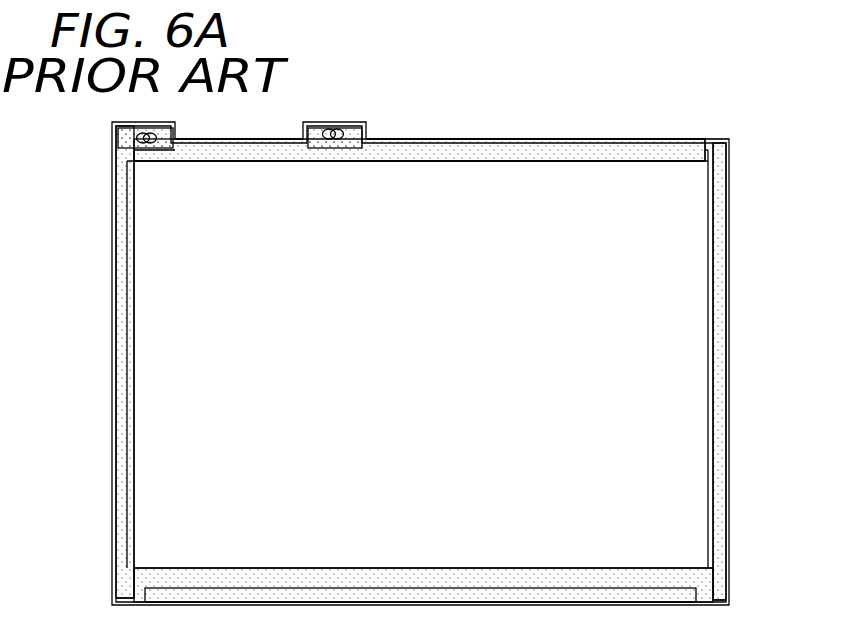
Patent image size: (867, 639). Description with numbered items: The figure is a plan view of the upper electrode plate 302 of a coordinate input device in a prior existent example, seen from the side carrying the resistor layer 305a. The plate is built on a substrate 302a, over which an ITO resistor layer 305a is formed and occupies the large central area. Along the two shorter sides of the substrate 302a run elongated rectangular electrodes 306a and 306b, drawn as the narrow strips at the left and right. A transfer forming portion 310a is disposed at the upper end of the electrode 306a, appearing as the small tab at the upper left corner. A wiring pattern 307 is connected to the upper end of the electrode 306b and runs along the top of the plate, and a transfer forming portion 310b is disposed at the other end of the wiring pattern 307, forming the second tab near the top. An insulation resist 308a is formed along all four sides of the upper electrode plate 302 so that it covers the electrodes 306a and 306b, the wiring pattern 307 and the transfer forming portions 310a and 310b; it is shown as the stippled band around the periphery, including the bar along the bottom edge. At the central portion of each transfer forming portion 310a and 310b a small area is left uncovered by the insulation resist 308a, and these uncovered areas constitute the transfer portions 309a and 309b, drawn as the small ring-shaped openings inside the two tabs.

The upper electrode plate 302 is at (487, 123).
The substrate 302a is at (733, 407).
The resistor layer 305a is at (660, 346).
The electrode 306a is at (130, 305).
The electrode 306b is at (710, 263).
The wiring pattern 307 is at (575, 140).
The insulation resist 308a is at (226, 140).
The transfer portion 309a is at (146, 143).
The transfer portion 309b is at (333, 139).
The transfer forming portion 310a is at (125, 137).
The transfer forming portion 310b is at (323, 124).